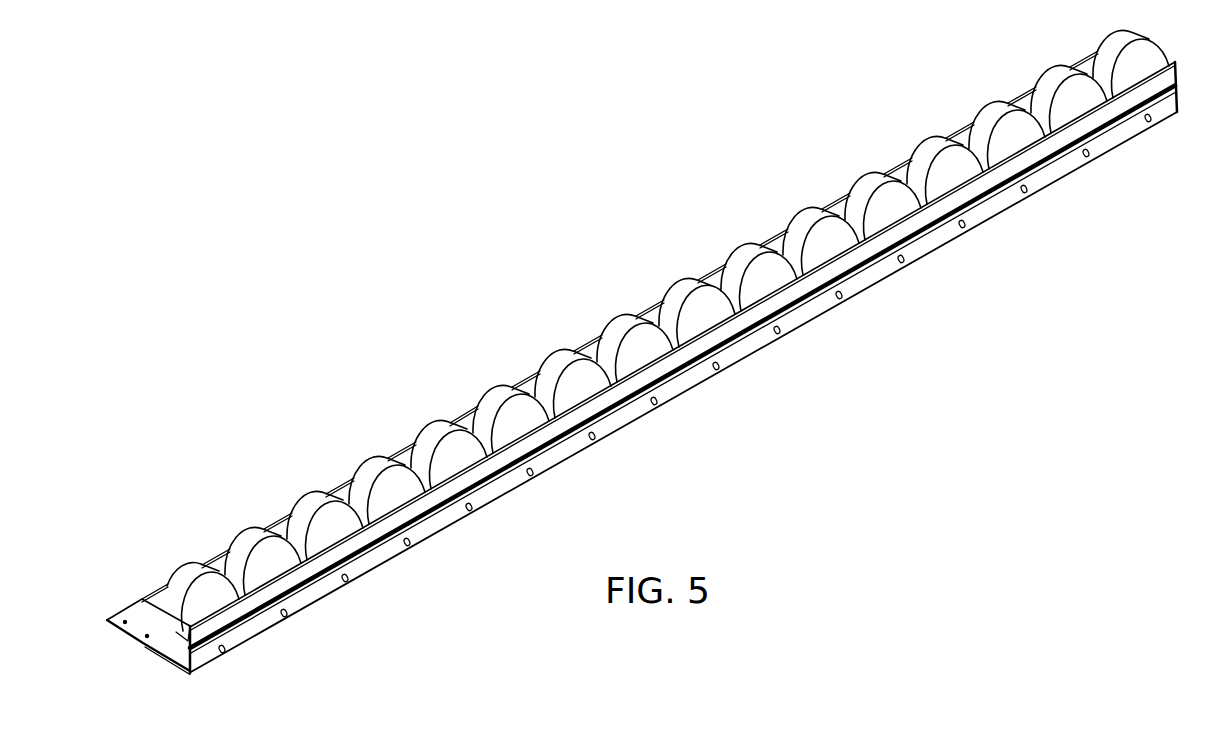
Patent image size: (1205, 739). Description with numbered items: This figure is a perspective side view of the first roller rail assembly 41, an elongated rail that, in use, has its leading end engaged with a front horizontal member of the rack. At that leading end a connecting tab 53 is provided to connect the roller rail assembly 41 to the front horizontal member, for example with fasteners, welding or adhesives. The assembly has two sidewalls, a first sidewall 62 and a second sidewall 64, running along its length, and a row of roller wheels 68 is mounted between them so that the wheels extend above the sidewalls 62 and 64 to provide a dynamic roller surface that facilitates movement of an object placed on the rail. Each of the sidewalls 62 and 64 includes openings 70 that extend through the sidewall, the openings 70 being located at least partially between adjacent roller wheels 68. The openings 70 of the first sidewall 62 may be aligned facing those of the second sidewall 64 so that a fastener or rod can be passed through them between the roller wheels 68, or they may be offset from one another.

The first roller rail assembly 41 is at (543, 274).
The connecting tab 53 is at (133, 608).
The first sidewall 62 is at (1018, 96).
The second sidewall 64 is at (751, 349).
The roller wheels 68 is at (822, 214).
The openings 70 is at (599, 441).